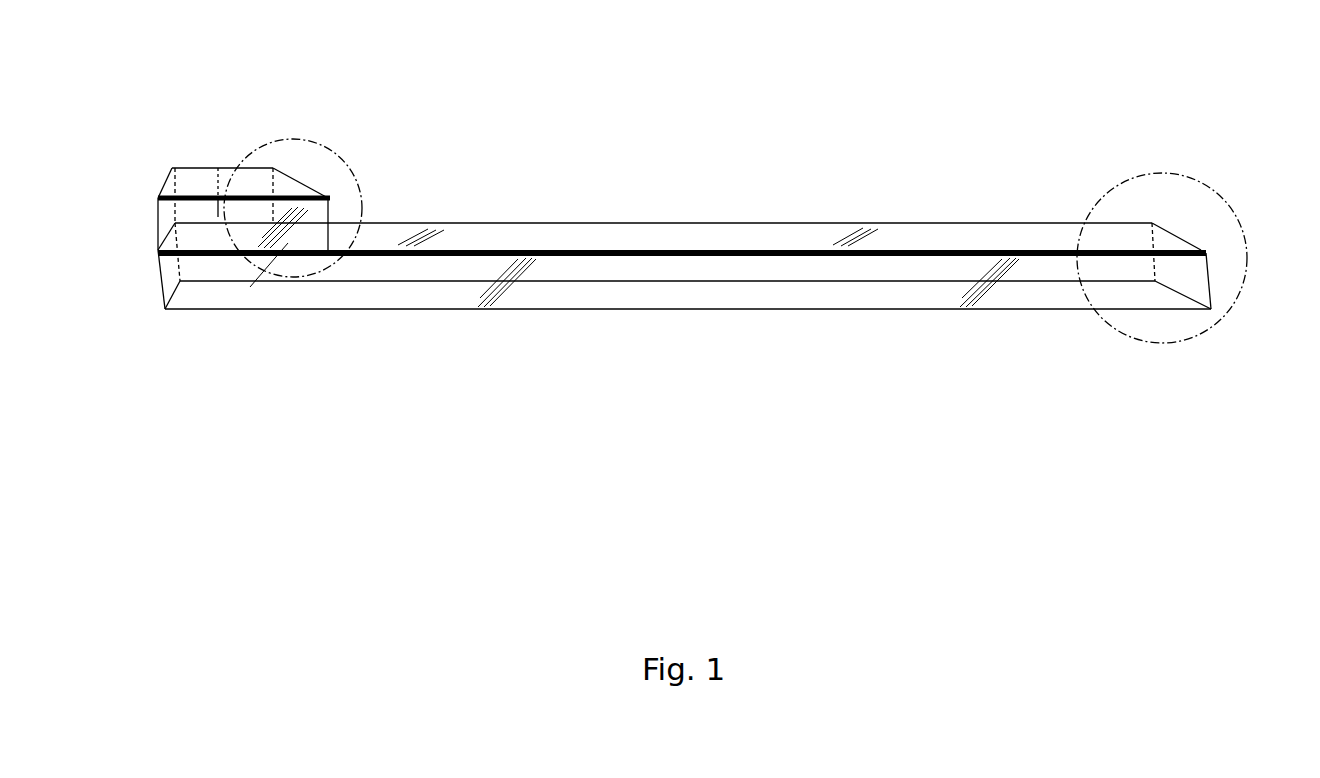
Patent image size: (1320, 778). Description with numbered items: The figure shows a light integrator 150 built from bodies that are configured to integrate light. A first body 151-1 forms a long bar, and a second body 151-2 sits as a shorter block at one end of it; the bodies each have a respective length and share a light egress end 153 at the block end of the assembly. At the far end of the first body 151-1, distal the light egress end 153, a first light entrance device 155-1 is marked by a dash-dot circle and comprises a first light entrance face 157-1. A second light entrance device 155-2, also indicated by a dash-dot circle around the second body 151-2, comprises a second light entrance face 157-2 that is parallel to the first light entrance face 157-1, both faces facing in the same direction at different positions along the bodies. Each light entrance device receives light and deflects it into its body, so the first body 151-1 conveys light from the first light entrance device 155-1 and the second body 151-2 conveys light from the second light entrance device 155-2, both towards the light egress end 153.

The light integrator 150 is at (672, 292).
The first body 151-1 is at (513, 288).
The second body 151-2 is at (198, 167).
The light egress end 153 is at (186, 156).
The first light entrance device 155-1 is at (1213, 192).
The second light entrance device 155-2 is at (352, 173).
The first light entrance face 157-1 is at (1180, 284).
The second light entrance face 157-2 is at (306, 232).